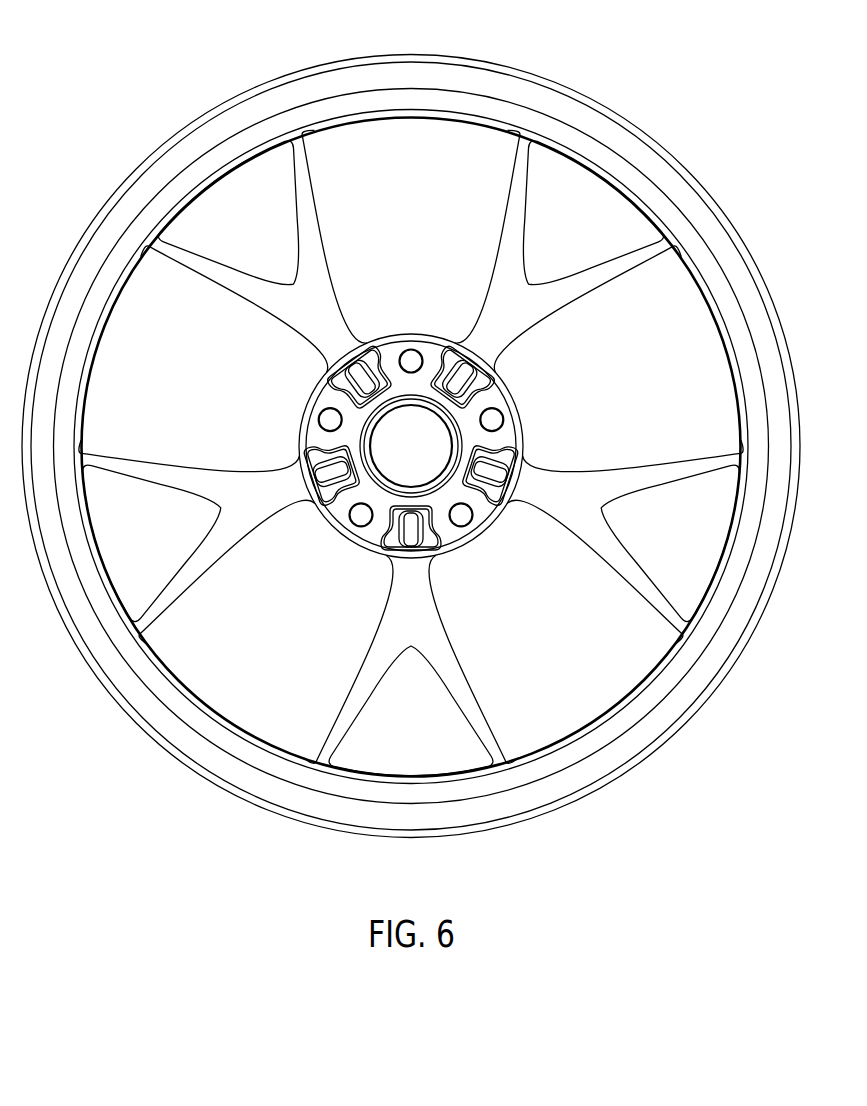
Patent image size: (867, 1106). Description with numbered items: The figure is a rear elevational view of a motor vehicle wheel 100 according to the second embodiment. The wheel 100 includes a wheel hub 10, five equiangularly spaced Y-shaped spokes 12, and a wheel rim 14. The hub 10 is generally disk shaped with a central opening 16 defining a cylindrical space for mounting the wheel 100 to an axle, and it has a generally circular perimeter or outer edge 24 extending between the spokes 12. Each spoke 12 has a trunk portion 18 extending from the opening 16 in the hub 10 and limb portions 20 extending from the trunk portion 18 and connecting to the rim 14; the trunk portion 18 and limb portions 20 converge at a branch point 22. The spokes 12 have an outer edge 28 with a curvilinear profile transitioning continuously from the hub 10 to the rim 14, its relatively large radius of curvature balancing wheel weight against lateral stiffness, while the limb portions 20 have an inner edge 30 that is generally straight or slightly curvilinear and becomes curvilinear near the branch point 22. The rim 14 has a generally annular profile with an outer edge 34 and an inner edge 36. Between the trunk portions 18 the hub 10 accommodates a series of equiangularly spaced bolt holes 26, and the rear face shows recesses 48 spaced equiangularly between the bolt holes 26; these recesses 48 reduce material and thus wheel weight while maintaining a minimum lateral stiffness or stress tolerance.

The wheel 100 is at (672, 40).
The wheel hub 10 is at (345, 545).
The Y-shaped spoke 12 is at (536, 273).
The wheel rim 14 is at (140, 168).
The central opening 16 is at (458, 442).
The trunk portion 18 is at (505, 293).
The limb portion 20 is at (510, 226).
The branch point 22 is at (220, 510).
The outer edge 24 is at (290, 402).
The bolt hole 26 is at (472, 525).
The outer edge 28 is at (286, 273).
The inner edge 30 is at (213, 248).
The outer edge 34 is at (200, 788).
The inner edge 36 is at (225, 705).
The recess 48 is at (436, 550).